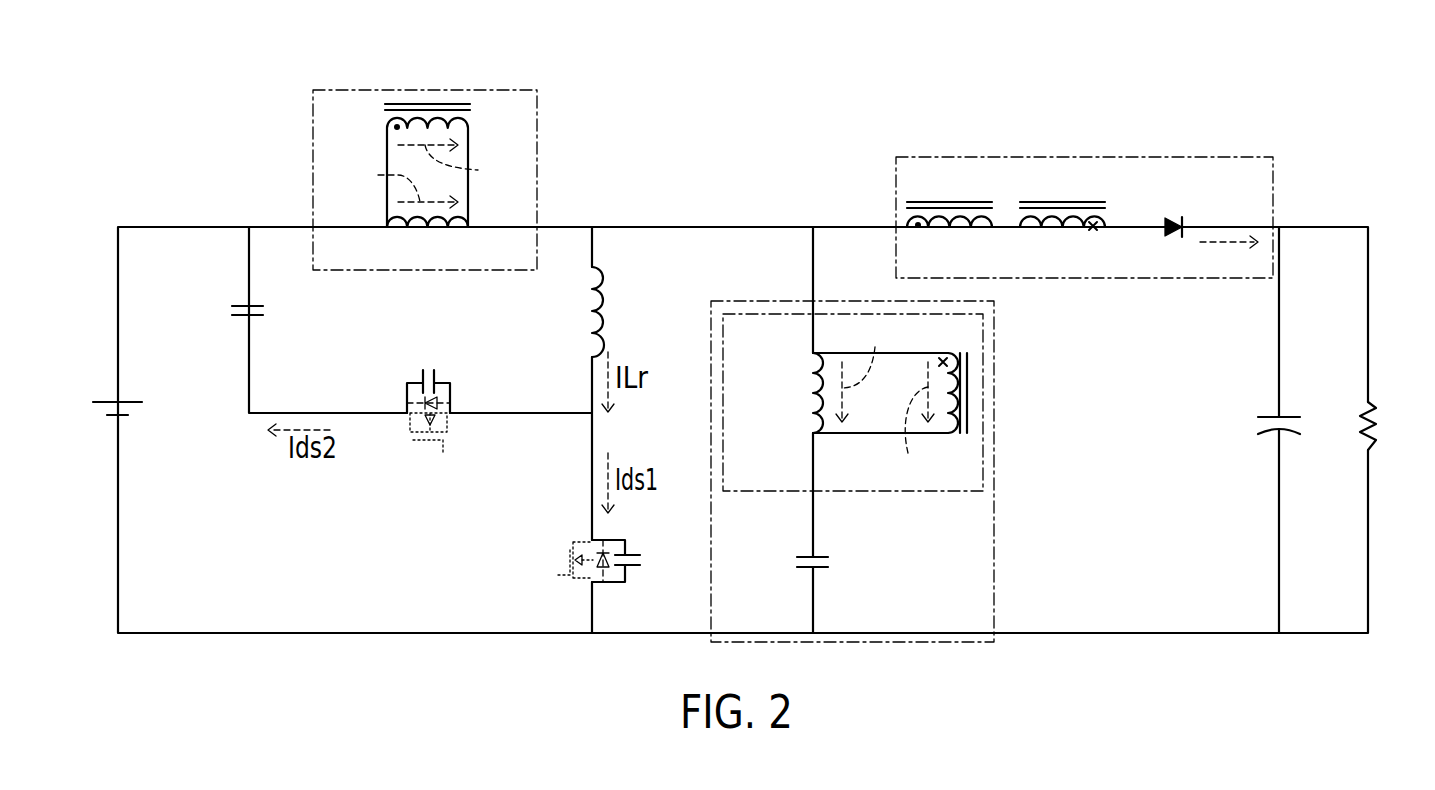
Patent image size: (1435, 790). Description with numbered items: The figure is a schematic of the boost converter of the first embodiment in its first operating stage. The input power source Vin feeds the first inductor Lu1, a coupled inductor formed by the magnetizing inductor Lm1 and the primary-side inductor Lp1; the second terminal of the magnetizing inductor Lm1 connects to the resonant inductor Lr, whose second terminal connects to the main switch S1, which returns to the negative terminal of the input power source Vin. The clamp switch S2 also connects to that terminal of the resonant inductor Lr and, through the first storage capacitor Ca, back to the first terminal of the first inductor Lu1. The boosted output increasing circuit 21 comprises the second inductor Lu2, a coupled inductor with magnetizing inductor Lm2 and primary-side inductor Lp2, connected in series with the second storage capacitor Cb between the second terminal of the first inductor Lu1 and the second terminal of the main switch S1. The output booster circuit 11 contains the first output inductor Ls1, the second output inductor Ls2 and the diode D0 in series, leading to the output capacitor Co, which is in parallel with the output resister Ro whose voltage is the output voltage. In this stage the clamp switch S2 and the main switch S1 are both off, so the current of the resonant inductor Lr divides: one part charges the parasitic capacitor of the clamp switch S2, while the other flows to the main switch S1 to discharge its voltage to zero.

The output booster circuit 11 is at (1083, 155).
The boosted output increasing circuit 21 is at (994, 567).
The first inductor Lu1 is at (537, 127).
The second inductor Lu2 is at (945, 492).
The primary-side inductor Lp1 is at (468, 122).
The magnetizing inductor Lm1 is at (467, 214).
The primary-side inductor Lp2 is at (948, 433).
The magnetizing inductor Lm2 is at (823, 427).
The resonant inductor Lr is at (587, 306).
The first storage capacitor Ca is at (238, 312).
The second storage capacitor Cb is at (823, 562).
The output capacitor Co is at (1261, 424).
The output resister Ro is at (1370, 423).
The main switch S1 is at (626, 565).
The clamp switch S2 is at (431, 430).
The input power source Vin is at (95, 406).
The first output inductor Ls1 is at (949, 233).
The second output inductor Ls2 is at (1062, 233).
The diode D0 is at (1170, 224).